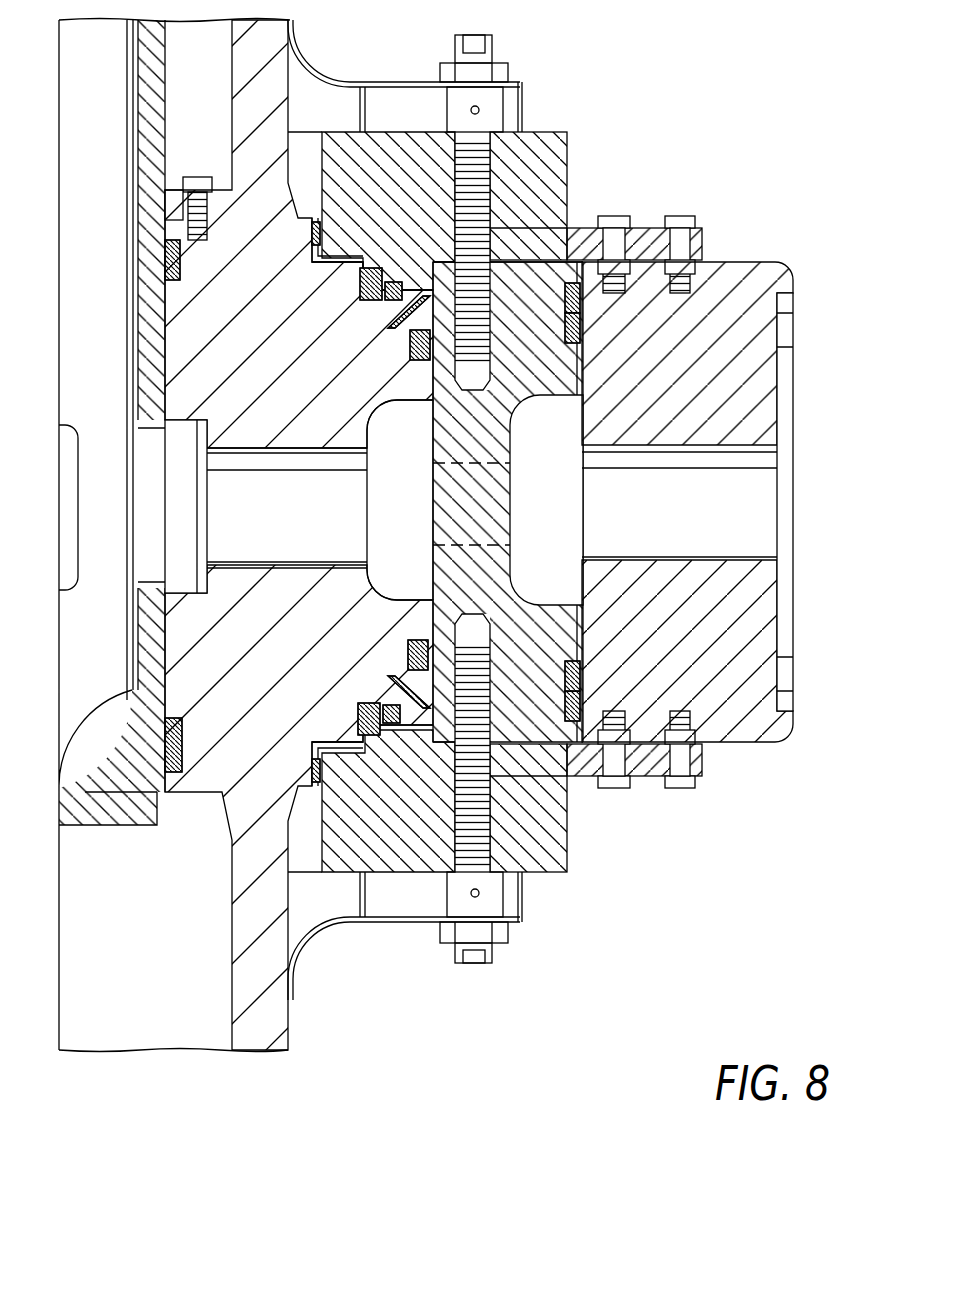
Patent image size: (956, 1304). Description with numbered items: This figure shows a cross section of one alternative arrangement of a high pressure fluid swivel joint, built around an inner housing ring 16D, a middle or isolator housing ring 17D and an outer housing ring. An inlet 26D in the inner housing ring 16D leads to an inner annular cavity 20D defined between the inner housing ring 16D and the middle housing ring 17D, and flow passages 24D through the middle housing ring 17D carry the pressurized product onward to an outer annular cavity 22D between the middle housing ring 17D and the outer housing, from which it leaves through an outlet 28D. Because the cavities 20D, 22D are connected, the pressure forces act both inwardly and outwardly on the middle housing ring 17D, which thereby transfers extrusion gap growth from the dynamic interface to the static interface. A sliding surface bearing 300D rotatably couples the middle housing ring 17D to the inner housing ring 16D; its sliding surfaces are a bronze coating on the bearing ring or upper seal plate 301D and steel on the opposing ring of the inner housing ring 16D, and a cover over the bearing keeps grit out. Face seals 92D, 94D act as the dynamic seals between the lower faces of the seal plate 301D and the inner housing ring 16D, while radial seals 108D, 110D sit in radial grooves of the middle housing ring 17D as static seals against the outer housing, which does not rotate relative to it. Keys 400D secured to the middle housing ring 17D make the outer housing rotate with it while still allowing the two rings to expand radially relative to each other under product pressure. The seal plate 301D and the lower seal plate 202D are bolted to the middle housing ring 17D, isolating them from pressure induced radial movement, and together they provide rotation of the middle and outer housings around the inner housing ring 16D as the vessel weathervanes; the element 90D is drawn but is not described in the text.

The inner housing ring 16D is at (247, 742).
The inner annular cavity 20D is at (395, 573).
The outer annular cavity 22D is at (560, 573).
The flow passages 24D is at (490, 521).
The inlet 26D is at (310, 522).
The outlet 28D is at (783, 517).
The seal ring 90D is at (399, 379).
The face seal 92D is at (381, 340).
The face seal 94D is at (340, 323).
The radial seal 108D is at (579, 330).
The radial seal 110D is at (578, 302).
The middle housing ring 17D is at (537, 297).
The sliding surface bearing 300D is at (328, 270).
The seal plate 301D is at (528, 180).
The keys 400D is at (647, 228).
The lower seal plate 202D is at (572, 878).